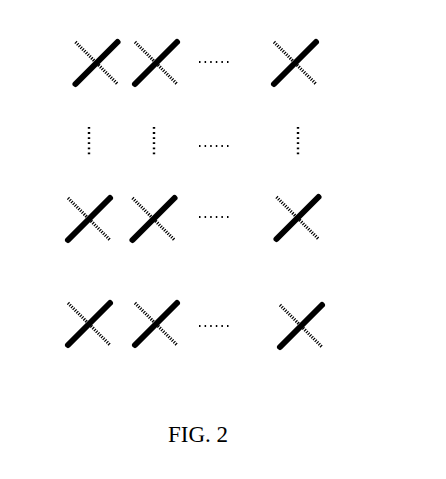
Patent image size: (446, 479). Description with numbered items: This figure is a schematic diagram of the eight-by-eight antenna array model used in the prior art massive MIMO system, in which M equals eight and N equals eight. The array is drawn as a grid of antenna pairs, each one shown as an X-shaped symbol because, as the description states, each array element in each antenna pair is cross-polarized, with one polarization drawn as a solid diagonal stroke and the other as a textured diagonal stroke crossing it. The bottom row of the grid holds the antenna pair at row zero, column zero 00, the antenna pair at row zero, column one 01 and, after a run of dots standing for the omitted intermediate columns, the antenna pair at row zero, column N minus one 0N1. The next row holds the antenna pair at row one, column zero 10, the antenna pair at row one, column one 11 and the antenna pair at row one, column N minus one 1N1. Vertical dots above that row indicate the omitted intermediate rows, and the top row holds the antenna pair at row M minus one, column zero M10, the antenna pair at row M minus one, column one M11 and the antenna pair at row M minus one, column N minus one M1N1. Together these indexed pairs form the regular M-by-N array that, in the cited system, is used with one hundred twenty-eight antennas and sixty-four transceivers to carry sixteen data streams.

The cross-polarized antenna pair at row M minus one, column zero M10 is at (88, 75).
The cross-polarized antenna pair at row M minus one, column one M11 is at (154, 75).
The cross-polarized antenna pair at row M minus one, column N minus one M1N1 is at (296, 75).
The cross-polarized antenna pair at row one, column zero 10 is at (89, 235).
The cross-polarized antenna pair at row one, column one 11 is at (154, 235).
The cross-polarized antenna pair at row one, column N minus one 1N1 is at (301, 234).
The cross-polarized antenna pair at row zero, column zero 00 is at (89, 344).
The cross-polarized antenna pair at row zero, column one 01 is at (156, 344).
The cross-polarized antenna pair at row zero, column N minus one 0N1 is at (303, 345).